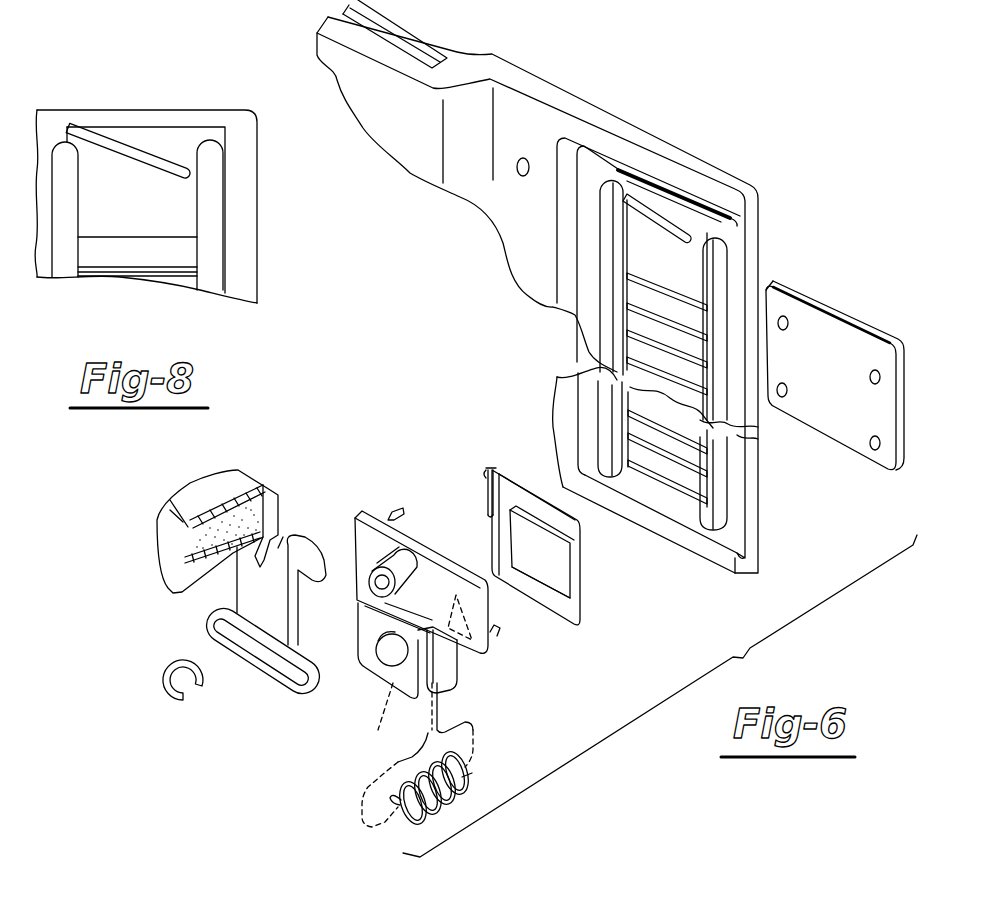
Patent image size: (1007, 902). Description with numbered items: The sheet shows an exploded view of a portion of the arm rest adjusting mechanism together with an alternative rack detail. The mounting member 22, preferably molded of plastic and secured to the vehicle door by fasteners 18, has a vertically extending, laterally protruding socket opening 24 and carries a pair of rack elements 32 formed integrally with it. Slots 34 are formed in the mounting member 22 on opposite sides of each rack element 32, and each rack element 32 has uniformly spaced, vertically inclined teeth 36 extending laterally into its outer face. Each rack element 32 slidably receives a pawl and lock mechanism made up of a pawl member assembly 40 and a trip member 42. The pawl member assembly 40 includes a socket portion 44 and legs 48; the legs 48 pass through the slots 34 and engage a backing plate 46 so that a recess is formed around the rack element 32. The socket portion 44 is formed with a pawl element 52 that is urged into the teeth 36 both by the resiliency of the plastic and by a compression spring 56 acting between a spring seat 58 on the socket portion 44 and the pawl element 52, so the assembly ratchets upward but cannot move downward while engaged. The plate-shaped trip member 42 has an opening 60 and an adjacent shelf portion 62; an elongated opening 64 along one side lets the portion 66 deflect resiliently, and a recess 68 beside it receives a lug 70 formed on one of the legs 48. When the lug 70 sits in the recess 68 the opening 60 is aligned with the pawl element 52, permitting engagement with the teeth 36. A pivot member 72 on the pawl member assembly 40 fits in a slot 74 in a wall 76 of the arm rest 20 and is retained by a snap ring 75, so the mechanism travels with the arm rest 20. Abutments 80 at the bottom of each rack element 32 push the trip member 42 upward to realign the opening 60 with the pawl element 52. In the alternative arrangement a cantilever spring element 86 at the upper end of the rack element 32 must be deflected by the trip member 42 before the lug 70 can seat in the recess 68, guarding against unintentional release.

In FIG. 6, the fasteners 18 is at (745, 212).
In FIG. 6, the arm rest 20 is at (232, 477).
In FIG. 6, the mounting member 22 is at (515, 75).
In FIG. 6, the socket opening 24 is at (397, 38).
In FIG. 8, the rack elements 32 is at (187, 212).
In FIG. 6, the rack elements 32 is at (687, 273).
In FIG. 8, the slots 34 is at (63, 262).
In FIG. 6, the slots 34 is at (722, 291).
In FIG. 8, the teeth 36 is at (180, 262).
In FIG. 6, the teeth 36 is at (707, 350).
In FIG. 6, the pawl member assembly 40 is at (375, 486).
In FIG. 6, the trip member 42 is at (572, 548).
In FIG. 6, the socket portion 44 is at (367, 660).
In FIG. 6, the backing plate 46 is at (836, 405).
In FIG. 6, the legs 48 is at (387, 513).
In FIG. 6, the pawl element 52 is at (458, 670).
In FIG. 6, the compression spring 56 is at (470, 777).
In FIG. 6, the spring seat 58 is at (396, 707).
In FIG. 6, the opening 60 is at (560, 603).
In FIG. 6, the shelf portion 62 is at (560, 545).
In FIG. 6, the elongated opening 64 is at (487, 487).
In FIG. 6, the portion 66 is at (487, 470).
In FIG. 6, the recess 68 is at (487, 513).
In FIG. 6, the lug 70 is at (400, 528).
In FIG. 6, the pivot member 72 is at (355, 542).
In FIG. 6, the slot 74 is at (268, 660).
In FIG. 6, the snap ring 75 is at (170, 703).
In FIG. 6, the wall 76 is at (273, 610).
In FIG. 6, the abutments 80 is at (736, 573).
In FIG. 8, the cantilever spring element 86 is at (133, 140).
In FIG. 6, the cantilever spring element 86 is at (657, 218).